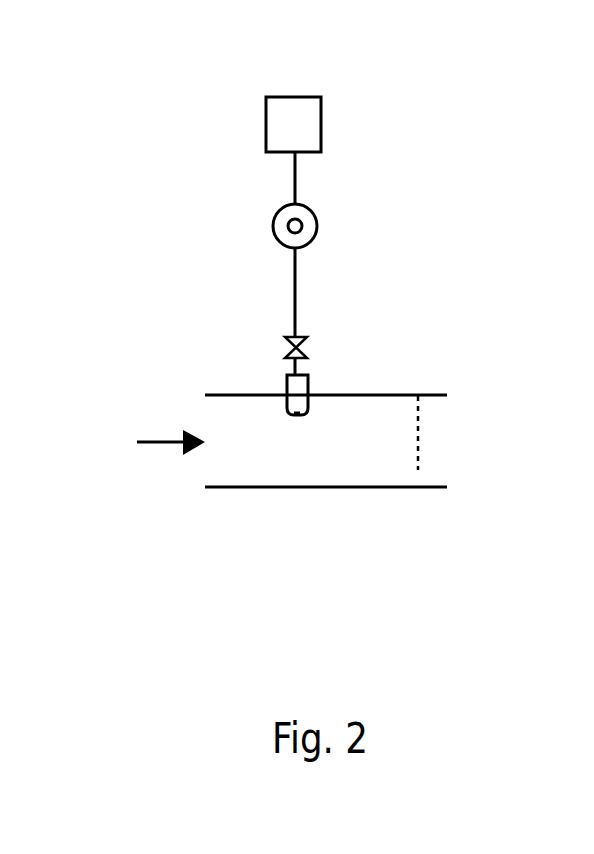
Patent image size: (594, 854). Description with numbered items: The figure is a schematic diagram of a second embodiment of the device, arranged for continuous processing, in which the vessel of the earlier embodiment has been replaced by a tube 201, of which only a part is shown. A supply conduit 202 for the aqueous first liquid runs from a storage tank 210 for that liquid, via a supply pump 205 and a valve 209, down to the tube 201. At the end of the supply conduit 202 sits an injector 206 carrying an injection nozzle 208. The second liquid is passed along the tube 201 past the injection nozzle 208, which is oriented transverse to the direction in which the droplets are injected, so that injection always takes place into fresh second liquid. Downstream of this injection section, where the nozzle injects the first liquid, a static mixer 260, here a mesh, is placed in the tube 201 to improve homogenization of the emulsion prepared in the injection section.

The tube 201 is at (222, 487).
The supply conduit 202 is at (272, 216).
The supply pump 205 is at (297, 182).
The injector 206 is at (287, 385).
The injection nozzle 208 is at (297, 414).
The valve 209 is at (307, 352).
The storage tank 210 is at (266, 121).
The static mixer 260 is at (420, 468).